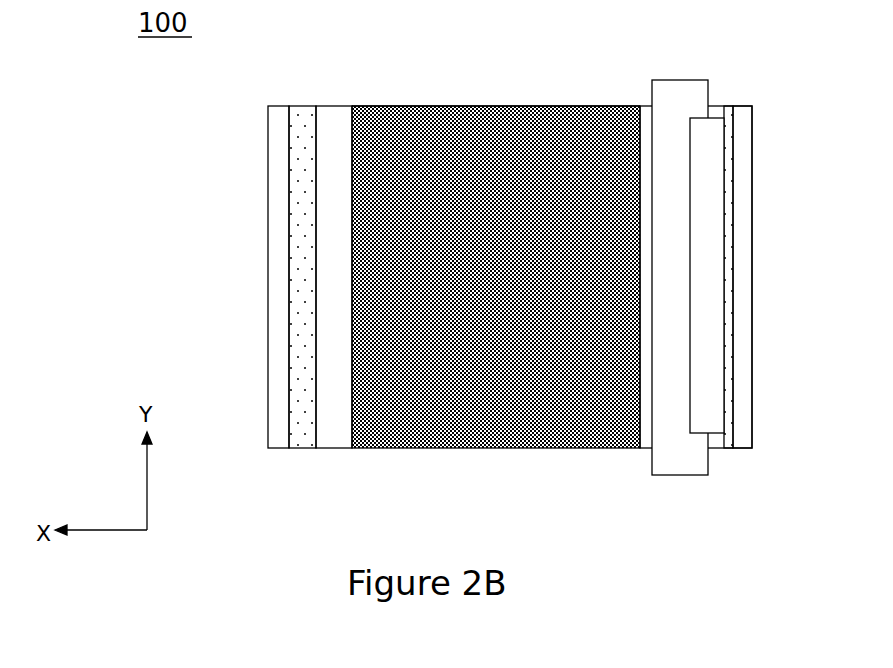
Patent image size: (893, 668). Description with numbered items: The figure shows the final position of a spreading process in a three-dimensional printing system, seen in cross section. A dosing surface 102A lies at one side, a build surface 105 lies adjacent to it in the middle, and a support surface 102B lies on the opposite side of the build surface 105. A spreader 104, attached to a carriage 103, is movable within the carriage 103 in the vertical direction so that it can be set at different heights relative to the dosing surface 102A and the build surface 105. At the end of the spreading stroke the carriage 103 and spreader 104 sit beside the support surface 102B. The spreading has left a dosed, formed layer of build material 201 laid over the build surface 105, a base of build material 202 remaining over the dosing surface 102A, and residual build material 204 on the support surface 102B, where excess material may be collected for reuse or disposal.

The dosing surface 102A is at (275, 118).
The support surface 102B is at (741, 122).
The carriage 103 is at (675, 457).
The spreader 104 is at (708, 389).
The build surface 105 is at (515, 108).
The formed layer of build material 201 is at (428, 428).
The base of build material 202 is at (308, 270).
The residual build material 204 is at (731, 210).